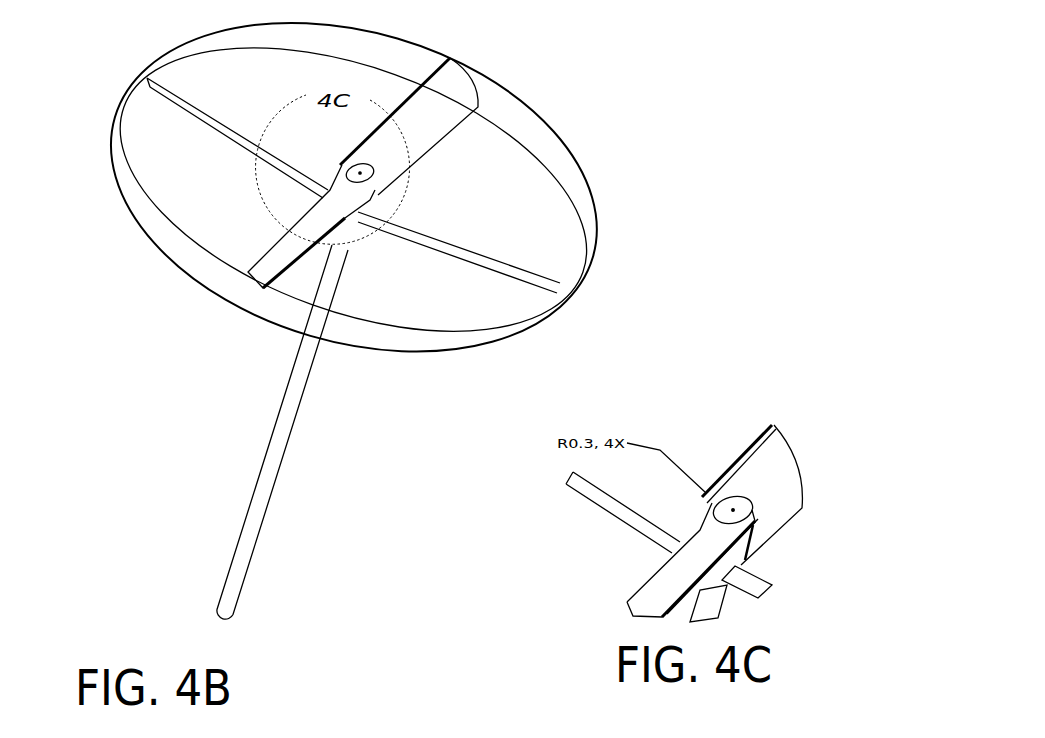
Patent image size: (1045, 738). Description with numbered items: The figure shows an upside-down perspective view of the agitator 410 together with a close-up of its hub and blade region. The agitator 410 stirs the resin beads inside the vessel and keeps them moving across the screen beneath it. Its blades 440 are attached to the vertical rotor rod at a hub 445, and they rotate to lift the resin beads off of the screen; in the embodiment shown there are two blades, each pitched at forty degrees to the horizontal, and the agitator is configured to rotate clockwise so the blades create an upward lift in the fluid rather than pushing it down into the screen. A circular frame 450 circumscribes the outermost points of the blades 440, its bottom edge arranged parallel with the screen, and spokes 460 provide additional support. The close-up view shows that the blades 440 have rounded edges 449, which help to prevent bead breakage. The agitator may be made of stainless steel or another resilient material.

In FIG. 4B, the agitator 410 is at (662, 125).
In FIG. 4B, the blades 440 is at (423, 113).
In FIG. 4C, the blades 440 is at (760, 468).
In FIG. 4C, the hub 445 is at (745, 517).
In FIG. 4C, the rounded edges 449 is at (660, 611).
In FIG. 4B, the circular frame 450 is at (213, 292).
In FIG. 4B, the spokes 460 is at (197, 110).